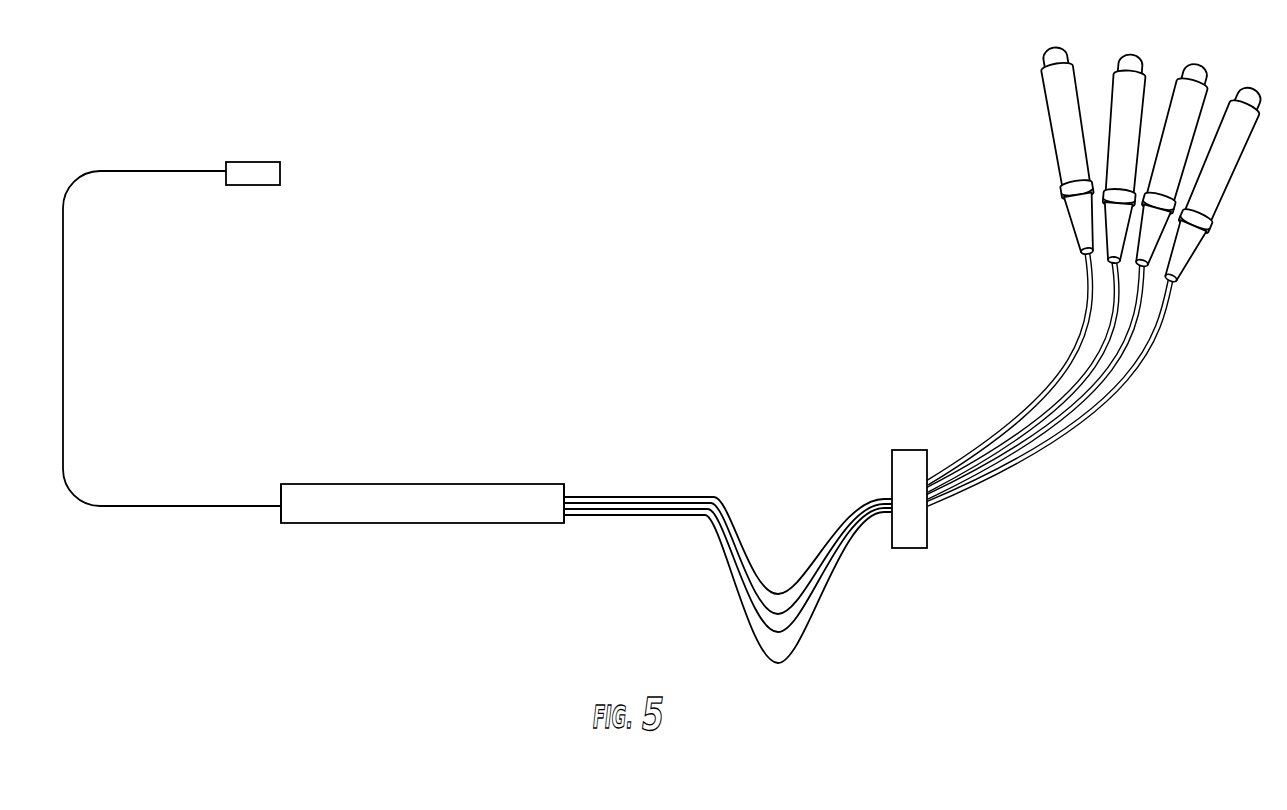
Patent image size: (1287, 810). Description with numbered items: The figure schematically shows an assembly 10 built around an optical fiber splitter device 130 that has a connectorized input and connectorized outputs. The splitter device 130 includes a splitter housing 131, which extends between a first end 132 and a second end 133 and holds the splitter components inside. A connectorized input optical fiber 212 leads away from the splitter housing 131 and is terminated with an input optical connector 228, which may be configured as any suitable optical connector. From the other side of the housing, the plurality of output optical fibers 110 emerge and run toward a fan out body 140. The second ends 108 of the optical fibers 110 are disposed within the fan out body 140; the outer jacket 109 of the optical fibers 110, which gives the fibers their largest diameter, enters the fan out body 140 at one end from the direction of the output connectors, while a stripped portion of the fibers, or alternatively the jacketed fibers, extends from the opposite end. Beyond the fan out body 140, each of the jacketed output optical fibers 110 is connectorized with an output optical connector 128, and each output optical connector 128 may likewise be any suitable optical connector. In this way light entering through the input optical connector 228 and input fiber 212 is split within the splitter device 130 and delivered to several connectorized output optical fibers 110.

The assembly 10 is at (510, 137).
The second end 108 is at (1088, 273).
The outer jacket 109 is at (1100, 418).
The optical fibers 110 is at (718, 526).
The output optical connector 128 is at (1040, 83).
The optical fiber splitter device 130 is at (406, 457).
The splitter housing 131 is at (360, 480).
The first end 132 is at (288, 492).
The second end 133 is at (567, 491).
The fan out body 140 is at (905, 457).
The connectorized input optical fiber 212 is at (63, 310).
The input optical connector 228 is at (253, 162).